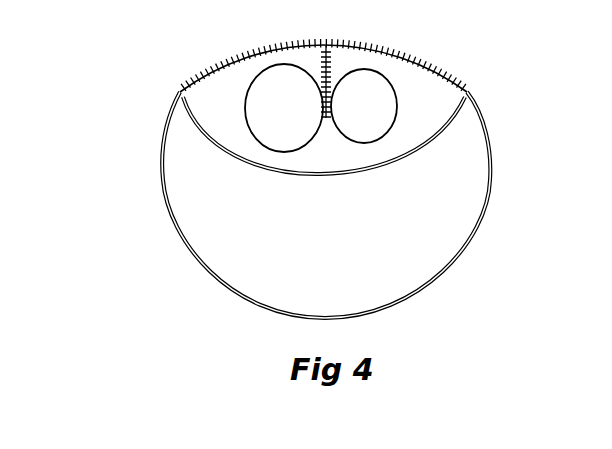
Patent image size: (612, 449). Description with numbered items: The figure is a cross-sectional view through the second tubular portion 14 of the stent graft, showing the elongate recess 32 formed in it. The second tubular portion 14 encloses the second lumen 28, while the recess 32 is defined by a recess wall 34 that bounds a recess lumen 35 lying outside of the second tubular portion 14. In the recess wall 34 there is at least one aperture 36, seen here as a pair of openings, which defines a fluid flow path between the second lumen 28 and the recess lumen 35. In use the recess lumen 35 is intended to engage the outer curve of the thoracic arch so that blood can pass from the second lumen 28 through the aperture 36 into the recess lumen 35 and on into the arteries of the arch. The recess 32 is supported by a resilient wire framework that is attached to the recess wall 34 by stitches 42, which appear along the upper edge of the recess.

The second tubular portion 14 is at (165, 200).
The second lumen 28 is at (341, 244).
The elongate recess 32 is at (430, 87).
The recess wall 34 is at (443, 135).
The recess lumen 35 is at (433, 121).
The aperture 36 is at (278, 102).
The stitches 42 is at (394, 58).